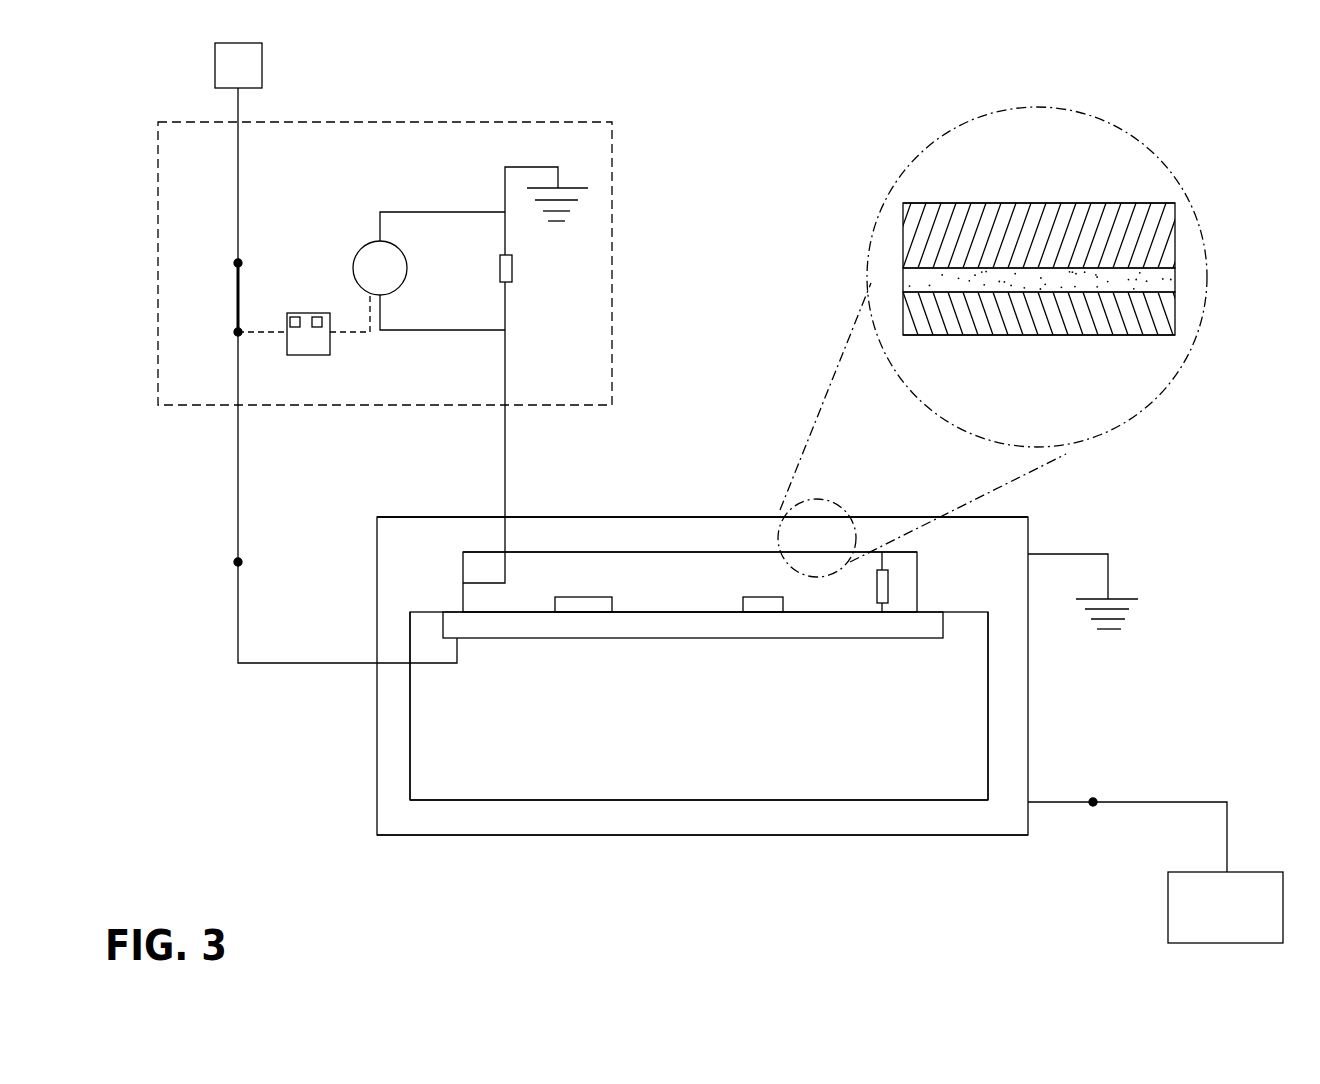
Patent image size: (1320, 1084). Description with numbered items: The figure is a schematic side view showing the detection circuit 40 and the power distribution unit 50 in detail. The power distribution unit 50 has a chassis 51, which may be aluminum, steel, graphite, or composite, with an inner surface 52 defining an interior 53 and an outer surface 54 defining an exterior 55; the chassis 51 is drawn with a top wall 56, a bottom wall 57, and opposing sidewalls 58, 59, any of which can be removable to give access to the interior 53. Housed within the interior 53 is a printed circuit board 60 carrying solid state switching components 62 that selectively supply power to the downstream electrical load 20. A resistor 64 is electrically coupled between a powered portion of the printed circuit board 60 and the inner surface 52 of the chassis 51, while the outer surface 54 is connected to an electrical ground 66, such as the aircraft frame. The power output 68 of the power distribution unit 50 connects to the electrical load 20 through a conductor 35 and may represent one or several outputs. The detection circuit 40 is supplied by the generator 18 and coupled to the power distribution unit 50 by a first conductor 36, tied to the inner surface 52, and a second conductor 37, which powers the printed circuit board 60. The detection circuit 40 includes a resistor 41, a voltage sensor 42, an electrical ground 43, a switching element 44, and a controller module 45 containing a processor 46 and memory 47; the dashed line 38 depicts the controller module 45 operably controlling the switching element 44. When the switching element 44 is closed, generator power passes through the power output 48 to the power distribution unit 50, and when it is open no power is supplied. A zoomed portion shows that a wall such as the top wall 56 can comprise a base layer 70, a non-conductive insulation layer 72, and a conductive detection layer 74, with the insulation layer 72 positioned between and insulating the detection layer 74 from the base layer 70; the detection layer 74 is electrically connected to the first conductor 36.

The generator 18 is at (238, 65).
The electrical load 20 is at (1225, 907).
The conductor 35 is at (1229, 820).
The first conductor 36 is at (505, 450).
The second conductor 37 is at (238, 470).
The signal line 38 is at (350, 333).
The detection circuit 40 is at (557, 118).
The resistor 41 is at (507, 265).
The voltage sensor 42 is at (365, 247).
The electrical ground 43 is at (593, 205).
The switching element 44 is at (236, 300).
The controller module 45 is at (303, 347).
The processor 46 is at (290, 317).
The memory 47 is at (316, 317).
The power output 48 is at (244, 560).
The power distribution unit 50 is at (333, 793).
The chassis 51 is at (650, 515).
The inner surface 52 is at (640, 555).
The interior 53 is at (770, 742).
The outer surface 54 is at (688, 515).
The exterior 55 is at (836, 886).
The top wall 56 is at (600, 525).
The bottom wall 57 is at (597, 818).
The sidewall 58 is at (393, 725).
The sidewall 59 is at (1002, 736).
The printed circuit board 60 is at (685, 622).
The solid state switching components 62 is at (577, 603).
The resistor 64 is at (878, 590).
The electrical ground 66 is at (1133, 580).
The power output 68 is at (1097, 798).
The base layer 70 is at (1157, 237).
The insulation layer 72 is at (1168, 282).
The detection layer 74 is at (1147, 310).